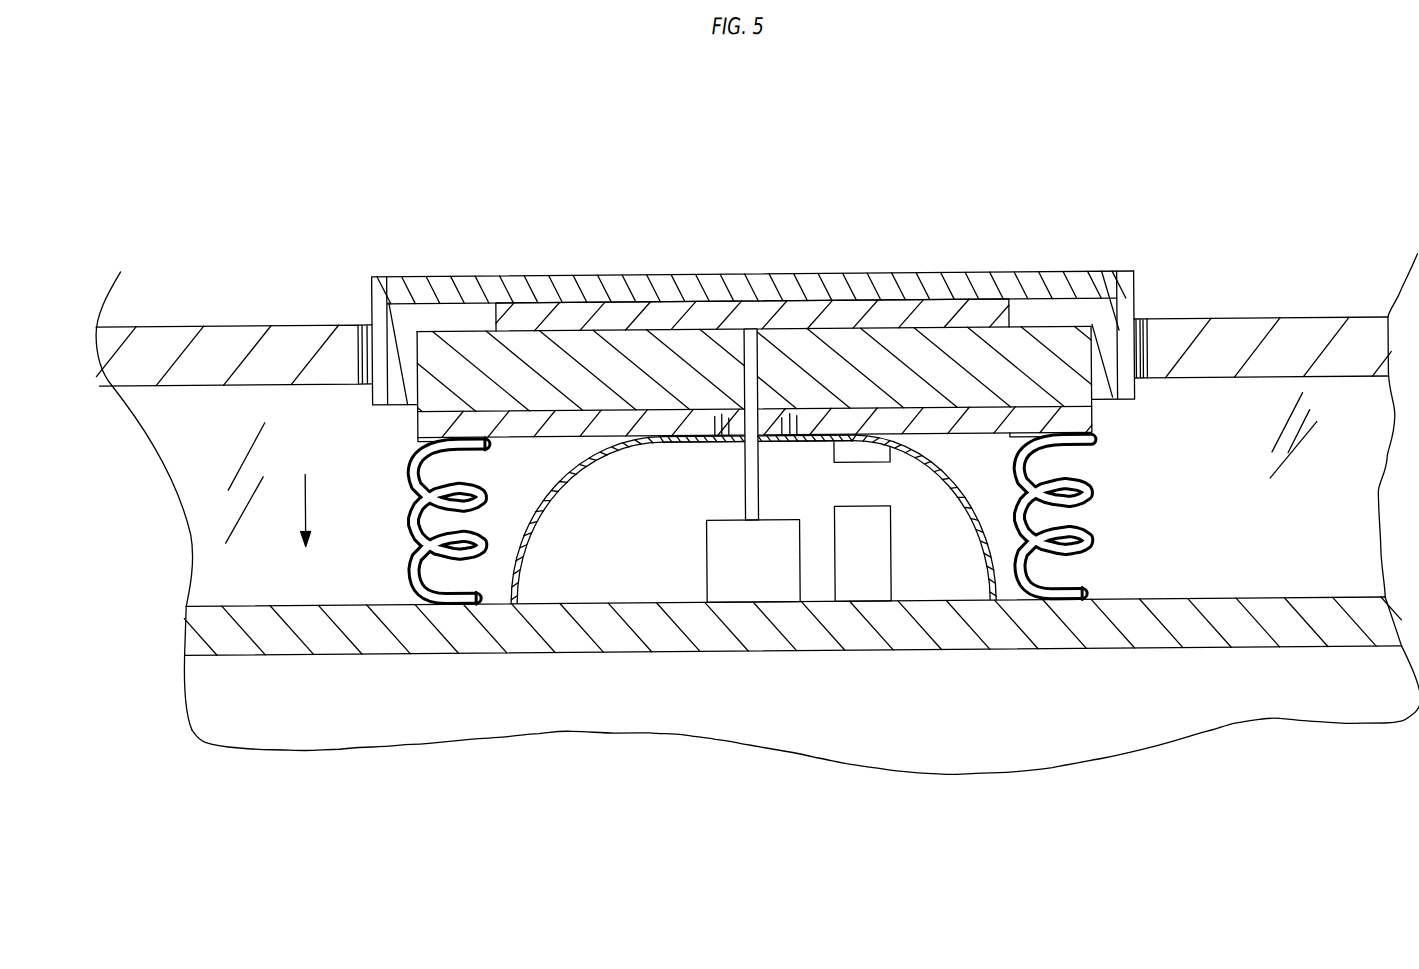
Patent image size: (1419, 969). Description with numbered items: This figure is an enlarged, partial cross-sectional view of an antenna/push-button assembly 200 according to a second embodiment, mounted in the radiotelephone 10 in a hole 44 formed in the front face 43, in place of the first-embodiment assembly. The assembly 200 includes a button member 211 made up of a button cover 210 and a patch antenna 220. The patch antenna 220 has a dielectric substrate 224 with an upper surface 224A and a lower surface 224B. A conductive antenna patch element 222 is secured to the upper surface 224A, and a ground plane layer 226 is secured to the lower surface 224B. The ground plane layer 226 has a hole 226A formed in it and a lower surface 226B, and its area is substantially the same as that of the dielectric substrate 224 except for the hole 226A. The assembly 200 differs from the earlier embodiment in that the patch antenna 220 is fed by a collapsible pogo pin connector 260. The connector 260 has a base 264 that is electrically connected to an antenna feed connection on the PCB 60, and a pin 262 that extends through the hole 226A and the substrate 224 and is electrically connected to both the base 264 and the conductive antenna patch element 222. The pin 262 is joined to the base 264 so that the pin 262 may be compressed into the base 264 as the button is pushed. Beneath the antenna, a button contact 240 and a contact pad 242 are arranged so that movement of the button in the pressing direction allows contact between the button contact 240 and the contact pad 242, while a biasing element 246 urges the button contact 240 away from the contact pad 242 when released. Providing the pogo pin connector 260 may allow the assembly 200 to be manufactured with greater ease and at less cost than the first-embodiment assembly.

The radiotelephone 10 is at (235, 160).
The antenna/push-button assembly 200 is at (896, 155).
The button cover 210 is at (468, 288).
The button member 211 is at (1123, 265).
The patch antenna 220 is at (400, 420).
The conductive antenna patch element 222 is at (580, 316).
The dielectric substrate 224 is at (1020, 342).
The upper surface of dielectric substrate 224A is at (975, 319).
The lower surface of dielectric substrate 224B is at (1097, 428).
The ground plane layer 226 is at (437, 427).
The hole in ground plane layer 226A is at (724, 443).
The lower surface of ground plane layer 226B is at (568, 438).
The button contact 240 is at (850, 458).
The contact pad 242 is at (870, 591).
The spring 246 is at (416, 569).
The collapsible pogo pin connector 260 is at (697, 558).
The pin 262 is at (760, 483).
The base 264 is at (735, 583).
The front face 43 is at (283, 344).
The hole 44 is at (360, 367).
The PCB 60 is at (955, 639).